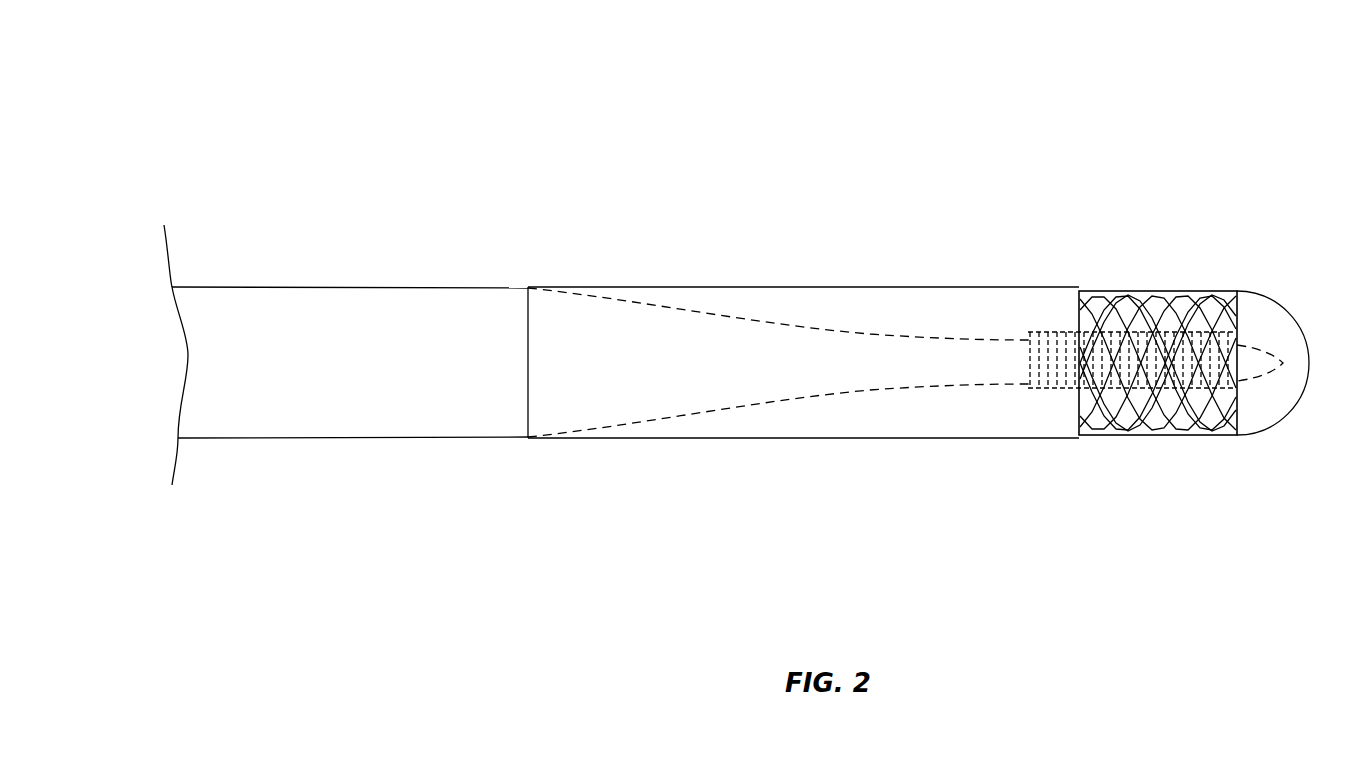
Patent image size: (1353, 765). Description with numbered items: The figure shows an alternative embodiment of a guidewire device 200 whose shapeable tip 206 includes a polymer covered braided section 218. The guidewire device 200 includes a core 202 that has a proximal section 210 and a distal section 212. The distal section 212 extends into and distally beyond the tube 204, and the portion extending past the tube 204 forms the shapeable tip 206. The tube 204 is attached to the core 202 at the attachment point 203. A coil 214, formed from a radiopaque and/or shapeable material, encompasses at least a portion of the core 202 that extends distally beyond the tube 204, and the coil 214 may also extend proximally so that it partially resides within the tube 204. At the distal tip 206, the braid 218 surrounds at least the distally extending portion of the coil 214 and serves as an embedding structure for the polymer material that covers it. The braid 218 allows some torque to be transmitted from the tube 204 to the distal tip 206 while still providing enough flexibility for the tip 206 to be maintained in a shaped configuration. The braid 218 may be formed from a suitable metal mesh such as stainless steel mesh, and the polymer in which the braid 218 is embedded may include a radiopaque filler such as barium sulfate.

The guidewire device 200 is at (275, 118).
The core 202 is at (395, 276).
The attachment point 203 is at (528, 287).
The tube 204 is at (862, 287).
The shapeable tip 206 is at (1079, 474).
The proximal section 210 is at (272, 408).
The distal section 212 is at (938, 363).
The coil 214 is at (1058, 335).
The polymer covered braid 218 is at (1210, 305).